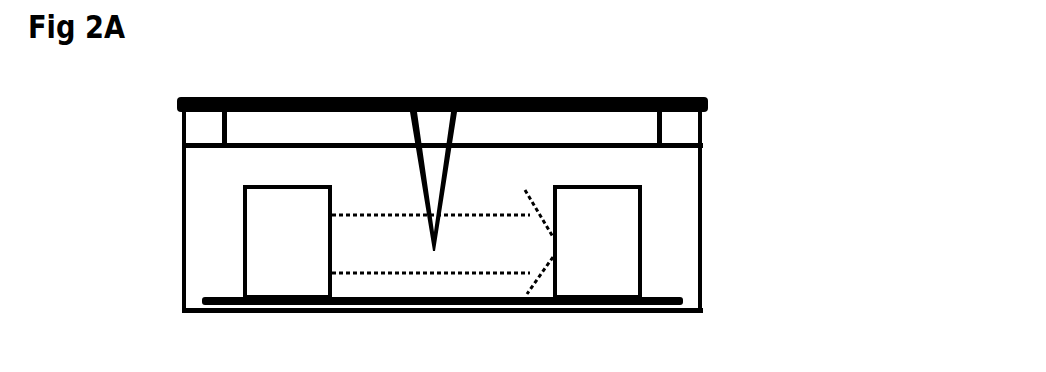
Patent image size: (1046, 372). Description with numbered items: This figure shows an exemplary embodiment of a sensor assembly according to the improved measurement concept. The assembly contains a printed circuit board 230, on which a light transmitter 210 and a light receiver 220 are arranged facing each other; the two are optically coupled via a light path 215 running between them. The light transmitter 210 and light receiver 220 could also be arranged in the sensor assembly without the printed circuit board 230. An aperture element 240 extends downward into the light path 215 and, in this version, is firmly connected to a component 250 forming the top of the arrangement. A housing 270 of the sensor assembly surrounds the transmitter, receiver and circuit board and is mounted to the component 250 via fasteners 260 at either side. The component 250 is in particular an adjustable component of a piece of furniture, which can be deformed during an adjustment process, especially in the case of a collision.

The light transmitter 210 is at (287, 243).
The light path 215 is at (442, 242).
The light receiver 220 is at (597, 243).
The printed circuit board 230 is at (683, 299).
The aperture element 240 is at (452, 186).
The component 250 is at (352, 97).
The fasteners 260 is at (194, 127).
The housing 270 is at (705, 177).